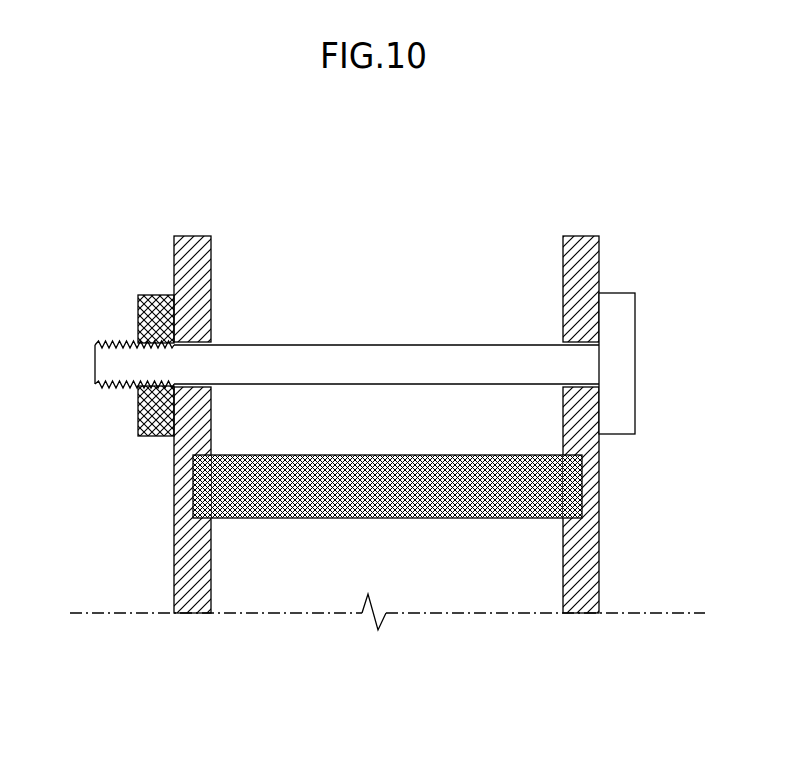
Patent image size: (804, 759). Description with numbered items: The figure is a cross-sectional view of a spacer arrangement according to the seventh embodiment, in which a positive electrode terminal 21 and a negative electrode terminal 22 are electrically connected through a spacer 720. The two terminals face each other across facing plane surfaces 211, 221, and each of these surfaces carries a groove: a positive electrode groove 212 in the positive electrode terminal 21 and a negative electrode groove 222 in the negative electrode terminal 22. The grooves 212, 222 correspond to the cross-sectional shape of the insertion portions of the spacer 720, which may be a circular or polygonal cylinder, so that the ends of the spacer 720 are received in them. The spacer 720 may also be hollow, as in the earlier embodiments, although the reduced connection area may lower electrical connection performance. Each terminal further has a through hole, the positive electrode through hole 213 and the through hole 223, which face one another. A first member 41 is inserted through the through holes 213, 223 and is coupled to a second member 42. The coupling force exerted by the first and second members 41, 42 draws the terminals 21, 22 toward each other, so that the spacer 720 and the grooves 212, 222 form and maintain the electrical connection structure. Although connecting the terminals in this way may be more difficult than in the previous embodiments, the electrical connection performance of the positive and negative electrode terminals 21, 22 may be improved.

The positive electrode terminal 21 is at (607, 376).
The negative electrode terminal 22 is at (170, 376).
The facing plane surface 211 is at (607, 429).
The positive electrode groove 212 is at (583, 481).
The positive electrode through hole 213 is at (582, 380).
The facing plane surface 221 is at (170, 429).
The negative electrode groove 222 is at (193, 480).
The through hole 223 is at (187, 386).
The first member 41 is at (622, 323).
The second member 42 is at (138, 312).
The spacer 720 is at (460, 509).